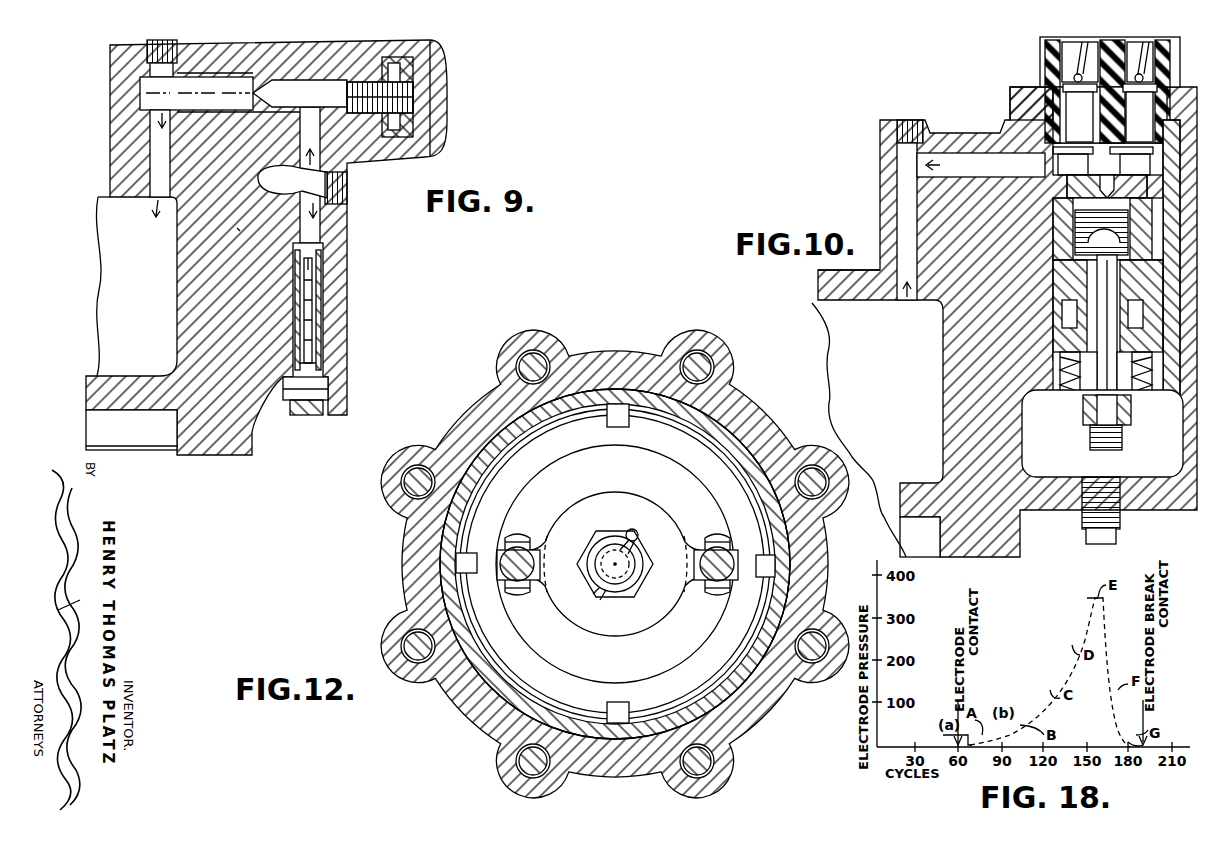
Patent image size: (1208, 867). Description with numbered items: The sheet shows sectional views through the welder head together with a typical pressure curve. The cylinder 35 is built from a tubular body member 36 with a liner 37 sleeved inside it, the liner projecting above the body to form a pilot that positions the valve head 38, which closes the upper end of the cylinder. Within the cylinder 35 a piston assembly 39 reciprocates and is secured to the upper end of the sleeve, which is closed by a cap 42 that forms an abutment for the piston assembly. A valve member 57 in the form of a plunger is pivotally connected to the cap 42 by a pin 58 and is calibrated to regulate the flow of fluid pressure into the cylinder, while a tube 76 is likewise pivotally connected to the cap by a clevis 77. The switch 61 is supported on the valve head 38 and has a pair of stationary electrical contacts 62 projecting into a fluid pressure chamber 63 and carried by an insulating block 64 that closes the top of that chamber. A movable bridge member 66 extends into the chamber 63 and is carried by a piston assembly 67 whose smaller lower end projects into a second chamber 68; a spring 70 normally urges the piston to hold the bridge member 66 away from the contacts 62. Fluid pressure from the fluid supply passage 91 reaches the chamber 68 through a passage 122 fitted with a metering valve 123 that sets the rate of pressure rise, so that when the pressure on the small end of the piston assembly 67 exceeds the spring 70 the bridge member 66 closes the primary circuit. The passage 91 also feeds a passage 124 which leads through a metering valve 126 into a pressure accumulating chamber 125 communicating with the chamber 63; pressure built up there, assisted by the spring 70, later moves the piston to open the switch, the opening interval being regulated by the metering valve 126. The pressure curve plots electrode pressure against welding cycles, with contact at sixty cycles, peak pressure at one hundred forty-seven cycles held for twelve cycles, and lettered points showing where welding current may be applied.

In FIG. 12, the cylinder 35 is at (422, 537).
In FIG. 12, the tubular body member 36 is at (750, 410).
In FIG. 12, the liner 37 is at (493, 443).
In FIG. 9, the valve head 38 is at (352, 318).
In FIG. 10, the valve head 38 is at (872, 213).
In FIG. 12, the piston assembly 39 is at (745, 537).
In FIG. 12, the cap 42 is at (717, 660).
In FIG. 12, the valve member 57 is at (690, 576).
In FIG. 12, the pin 58 is at (718, 536).
In FIG. 10, the switch 61 is at (1034, 85).
In FIG. 10, the stationary electrical contacts 62 is at (1175, 88).
In FIG. 10, the fluid pressure chamber 63 is at (1053, 210).
In FIG. 10, the insulating block 64 is at (1053, 103).
In FIG. 10, the movable bridge member 66 is at (1060, 200).
In FIG. 10, the piston assembly 67 is at (1067, 270).
In FIG. 10, the second chamber 68 is at (1033, 410).
In FIG. 10, the spring 70 is at (1137, 380).
In FIG. 12, the tube 76 is at (526, 549).
In FIG. 12, the clevis 77 is at (530, 590).
In FIG. 9, the fluid supply passage 91 is at (237, 228).
In FIG. 9, the passage 122 is at (322, 227).
In FIG. 10, the passage 122 is at (1075, 405).
In FIG. 9, the metering valve 123 is at (326, 274).
In FIG. 9, the passage 124 is at (166, 202).
In FIG. 9, the pressure accumulating chamber 125 is at (118, 200).
In FIG. 10, the pressure accumulating chamber 125 is at (818, 344).
In FIG. 9, the metering valve 126 is at (293, 92).